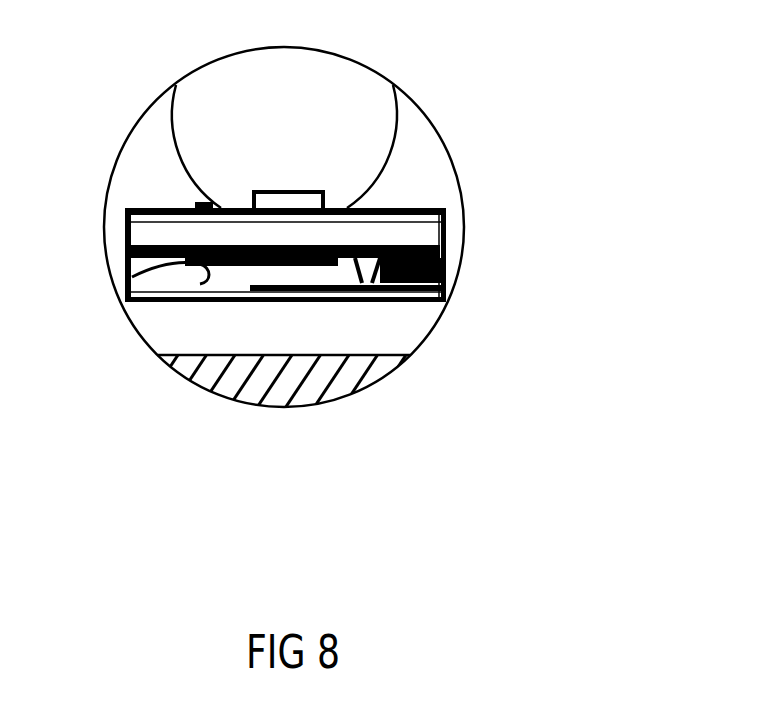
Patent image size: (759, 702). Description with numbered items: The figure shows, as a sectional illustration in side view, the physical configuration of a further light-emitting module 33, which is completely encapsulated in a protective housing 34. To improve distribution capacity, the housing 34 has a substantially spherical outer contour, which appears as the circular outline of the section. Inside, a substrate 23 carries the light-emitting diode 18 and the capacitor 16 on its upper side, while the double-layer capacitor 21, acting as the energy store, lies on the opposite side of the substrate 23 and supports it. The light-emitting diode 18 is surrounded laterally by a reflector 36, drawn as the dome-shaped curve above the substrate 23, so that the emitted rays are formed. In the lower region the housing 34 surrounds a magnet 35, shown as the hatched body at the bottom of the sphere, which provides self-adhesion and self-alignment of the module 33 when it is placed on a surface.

The light-emitting module 33 is at (572, 84).
The reflector 36 is at (178, 137).
The substrate 23 is at (140, 230).
The double-layer capacitor 21 is at (132, 277).
The capacitor 16 is at (197, 205).
The light-emitting diode 18 is at (307, 187).
The protective housing 34 is at (427, 330).
The magnet 35 is at (338, 385).